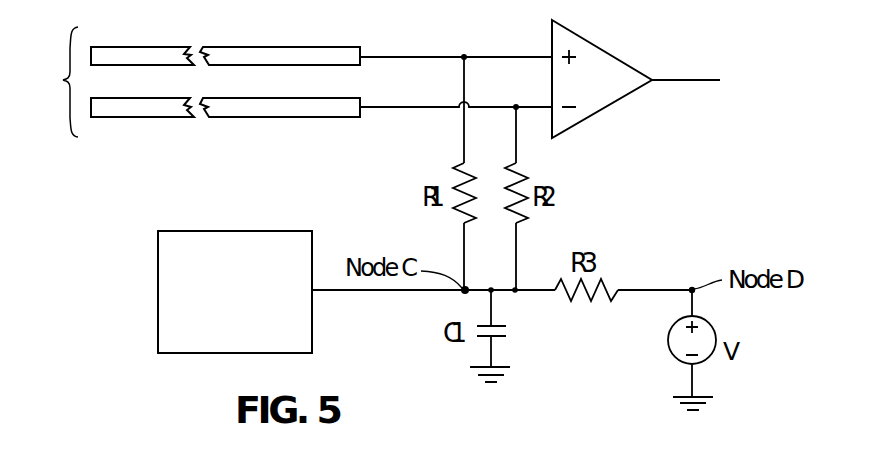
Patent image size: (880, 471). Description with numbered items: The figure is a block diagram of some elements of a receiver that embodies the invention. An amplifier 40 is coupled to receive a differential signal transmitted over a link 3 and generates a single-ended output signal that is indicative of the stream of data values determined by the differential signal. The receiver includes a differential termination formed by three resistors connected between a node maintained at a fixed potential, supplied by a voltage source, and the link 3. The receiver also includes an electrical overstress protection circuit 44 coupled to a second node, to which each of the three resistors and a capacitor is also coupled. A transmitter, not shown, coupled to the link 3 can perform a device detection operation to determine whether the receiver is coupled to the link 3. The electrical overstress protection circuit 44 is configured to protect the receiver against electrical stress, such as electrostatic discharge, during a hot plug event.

The link 3 is at (70, 107).
The amplifier 40 is at (612, 52).
The electrical overstress protection circuit 44 is at (158, 280).